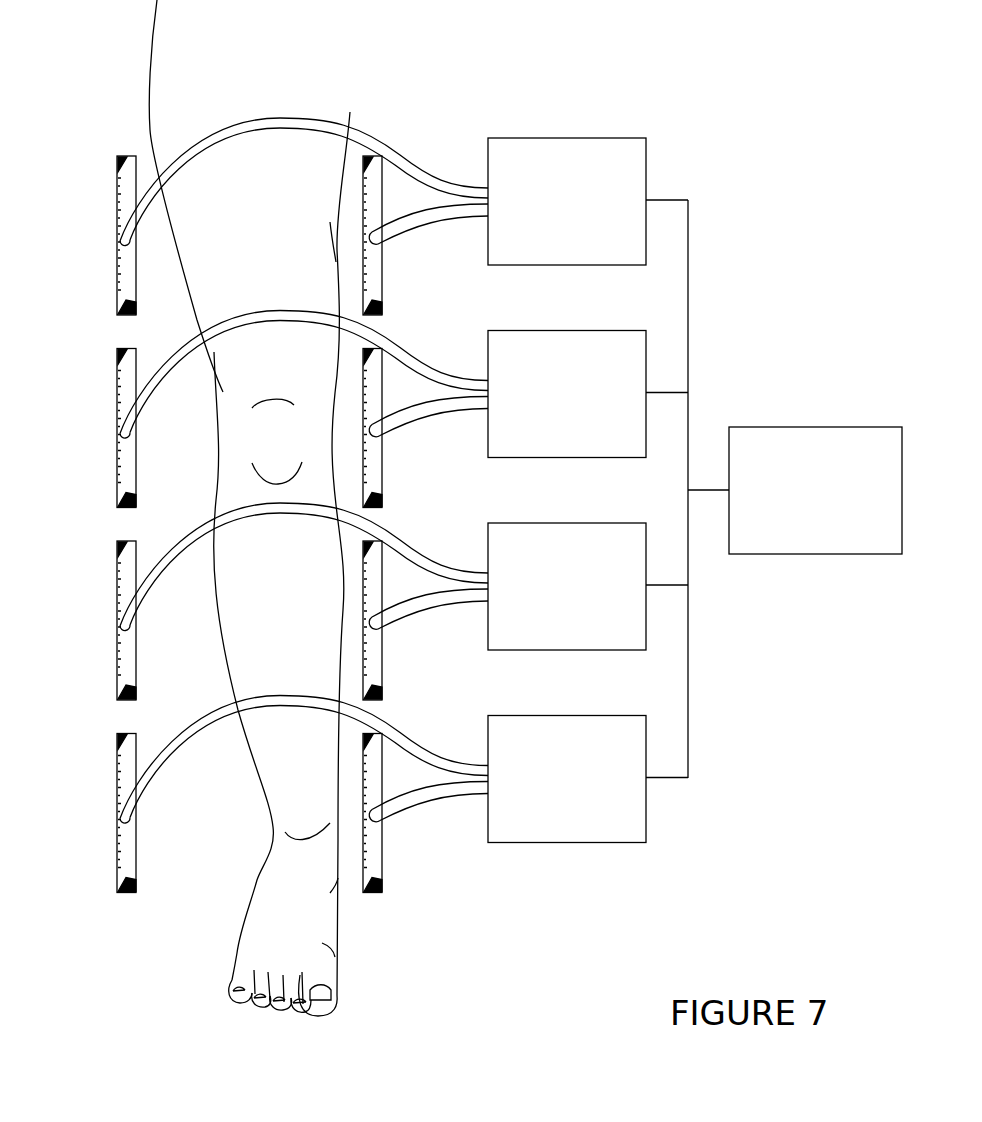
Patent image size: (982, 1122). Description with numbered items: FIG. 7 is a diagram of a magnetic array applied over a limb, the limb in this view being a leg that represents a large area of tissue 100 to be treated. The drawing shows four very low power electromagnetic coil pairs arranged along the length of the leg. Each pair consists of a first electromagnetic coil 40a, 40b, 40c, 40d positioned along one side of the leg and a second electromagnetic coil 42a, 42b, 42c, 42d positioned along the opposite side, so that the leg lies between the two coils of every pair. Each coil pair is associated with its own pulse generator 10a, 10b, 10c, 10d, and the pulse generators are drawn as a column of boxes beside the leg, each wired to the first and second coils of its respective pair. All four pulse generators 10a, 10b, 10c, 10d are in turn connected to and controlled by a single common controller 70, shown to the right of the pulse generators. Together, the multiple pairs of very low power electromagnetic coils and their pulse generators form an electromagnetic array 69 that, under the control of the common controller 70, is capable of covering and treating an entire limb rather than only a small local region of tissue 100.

The tissue 100 is at (172, 86).
The electromagnetic array 69 is at (421, 84).
The first electromagnetic coil 40a is at (276, 794).
The first electromagnetic coil 40b is at (276, 601).
The first electromagnetic coil 40c is at (276, 409).
The first electromagnetic coil 40d is at (117, 236).
The second electromagnetic coil 42a is at (425, 813).
The second electromagnetic coil 42b is at (425, 620).
The second electromagnetic coil 42c is at (425, 428).
The second electromagnetic coil 42d is at (384, 273).
The pulse generator 10a is at (588, 760).
The pulse generator 10b is at (588, 567).
The pulse generator 10c is at (588, 375).
The pulse generator 10d is at (566, 138).
The common controller 70 is at (815, 427).